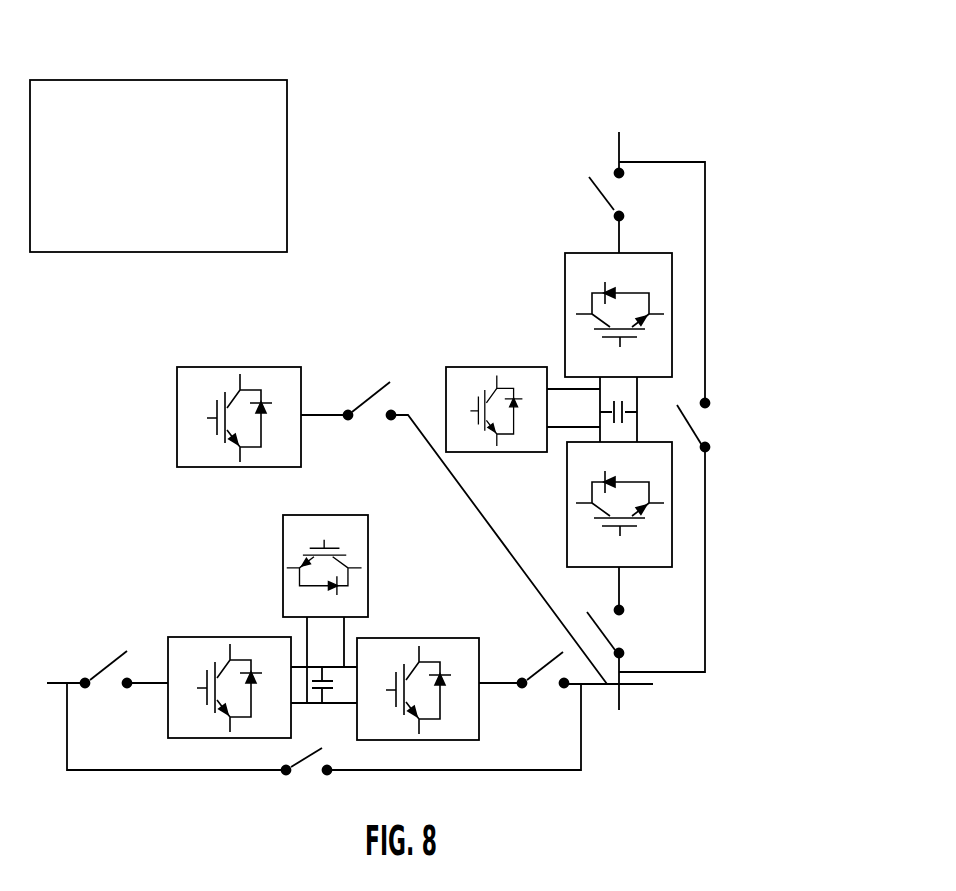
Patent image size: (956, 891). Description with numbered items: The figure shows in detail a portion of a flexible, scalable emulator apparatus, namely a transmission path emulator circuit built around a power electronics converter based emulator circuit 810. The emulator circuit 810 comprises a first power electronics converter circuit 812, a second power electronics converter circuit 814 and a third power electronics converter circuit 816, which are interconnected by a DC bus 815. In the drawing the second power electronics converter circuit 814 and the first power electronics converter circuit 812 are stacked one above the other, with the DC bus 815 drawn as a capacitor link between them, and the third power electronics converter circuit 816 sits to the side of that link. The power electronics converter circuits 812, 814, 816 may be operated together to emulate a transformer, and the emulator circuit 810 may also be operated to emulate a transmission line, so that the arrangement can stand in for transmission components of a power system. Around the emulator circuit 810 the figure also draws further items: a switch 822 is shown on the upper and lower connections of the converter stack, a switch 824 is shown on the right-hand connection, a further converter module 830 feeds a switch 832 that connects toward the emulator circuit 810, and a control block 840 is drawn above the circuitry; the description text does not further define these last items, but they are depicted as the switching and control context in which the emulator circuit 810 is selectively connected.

The control 840 is at (147, 80).
The power electronics converter based emulator circuit 810 is at (470, 296).
The first power electronics converter circuit 812 is at (567, 495).
The second power electronics converter circuit 814 is at (565, 262).
The DC bus 815 is at (650, 414).
The third power electronics converter circuit 816 is at (463, 367).
The switch 822 is at (550, 163).
The switch 824 is at (719, 420).
The switching module 830 is at (177, 397).
The switch 832 is at (352, 378).